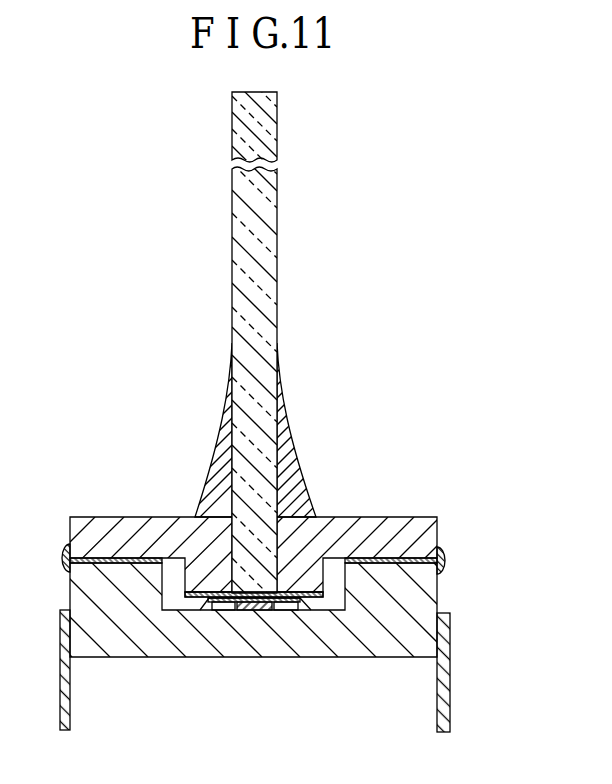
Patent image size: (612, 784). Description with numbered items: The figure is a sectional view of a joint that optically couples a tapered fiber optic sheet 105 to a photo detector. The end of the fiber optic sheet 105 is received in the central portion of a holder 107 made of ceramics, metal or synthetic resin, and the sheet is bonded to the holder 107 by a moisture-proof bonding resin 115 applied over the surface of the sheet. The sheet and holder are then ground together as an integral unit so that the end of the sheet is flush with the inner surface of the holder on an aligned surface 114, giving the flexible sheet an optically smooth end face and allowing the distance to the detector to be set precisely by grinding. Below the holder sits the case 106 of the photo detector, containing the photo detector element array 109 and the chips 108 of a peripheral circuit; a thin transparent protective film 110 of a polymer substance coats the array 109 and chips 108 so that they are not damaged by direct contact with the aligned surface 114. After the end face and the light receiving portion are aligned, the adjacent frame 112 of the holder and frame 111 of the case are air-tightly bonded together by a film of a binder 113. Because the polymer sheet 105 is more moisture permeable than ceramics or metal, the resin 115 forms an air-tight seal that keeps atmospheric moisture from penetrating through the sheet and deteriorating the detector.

The fiber optic sheet 105 is at (262, 262).
The case of the photo detector 106 is at (330, 634).
The holder 107 is at (327, 520).
The chips of a peripheral circuit 108 is at (222, 606).
The photo detector element array 109 is at (256, 607).
The transparent protective film 110 is at (200, 605).
The frame of the case 111 is at (410, 568).
The frame of a holder 112 is at (408, 553).
The film of a binder 113 is at (227, 588).
The aligned surface 114 is at (223, 588).
The moisture-proof bonding resin 115 is at (289, 424).